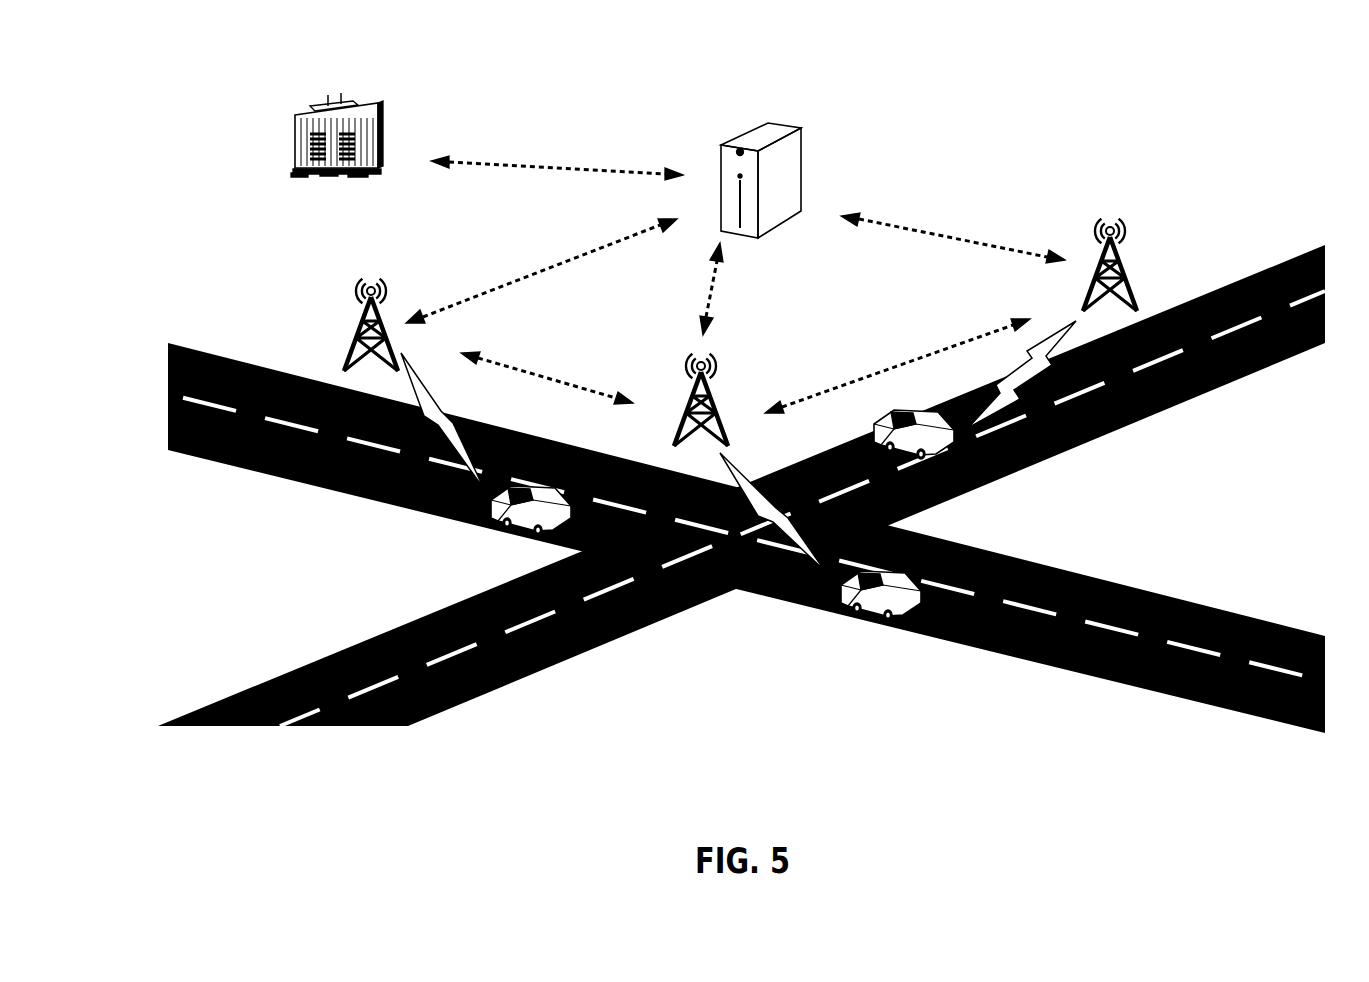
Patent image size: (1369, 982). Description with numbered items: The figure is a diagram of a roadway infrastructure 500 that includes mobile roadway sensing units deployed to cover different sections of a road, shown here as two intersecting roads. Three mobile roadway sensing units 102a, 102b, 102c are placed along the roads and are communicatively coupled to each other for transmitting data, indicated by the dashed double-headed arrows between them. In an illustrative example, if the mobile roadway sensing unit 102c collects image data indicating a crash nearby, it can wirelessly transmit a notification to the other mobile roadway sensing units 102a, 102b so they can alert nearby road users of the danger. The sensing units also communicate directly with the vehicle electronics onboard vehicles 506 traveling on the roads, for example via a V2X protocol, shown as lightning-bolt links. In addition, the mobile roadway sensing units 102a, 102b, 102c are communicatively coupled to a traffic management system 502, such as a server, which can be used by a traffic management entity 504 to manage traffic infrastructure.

The roadway infrastructure 500 is at (741, 372).
The traffic management system 502 is at (793, 140).
The traffic management entity 504 is at (380, 107).
The mobile roadway sensing unit 102a is at (377, 262).
The mobile roadway sensing unit 102b is at (717, 350).
The mobile roadway sensing unit 102c is at (1132, 213).
The vehicles 506 is at (838, 607).